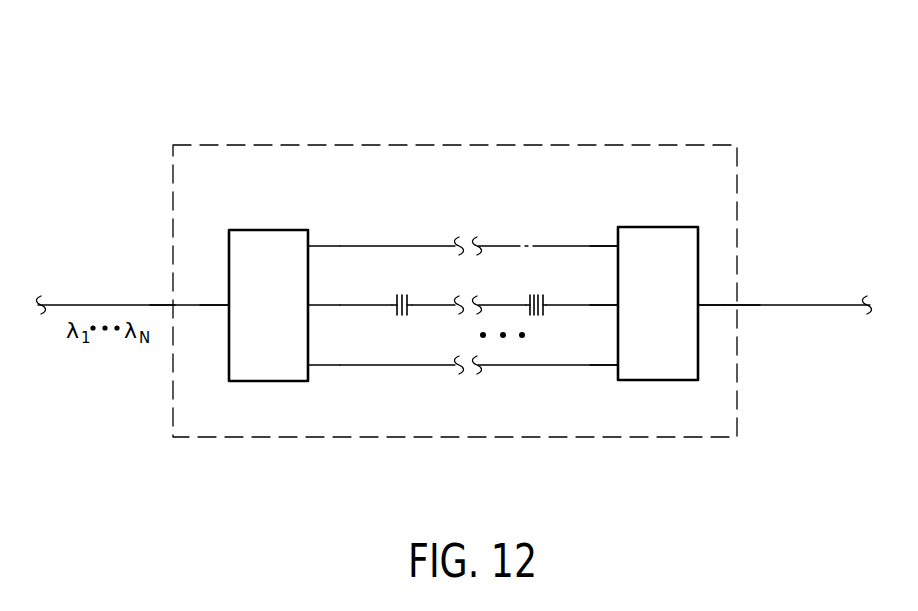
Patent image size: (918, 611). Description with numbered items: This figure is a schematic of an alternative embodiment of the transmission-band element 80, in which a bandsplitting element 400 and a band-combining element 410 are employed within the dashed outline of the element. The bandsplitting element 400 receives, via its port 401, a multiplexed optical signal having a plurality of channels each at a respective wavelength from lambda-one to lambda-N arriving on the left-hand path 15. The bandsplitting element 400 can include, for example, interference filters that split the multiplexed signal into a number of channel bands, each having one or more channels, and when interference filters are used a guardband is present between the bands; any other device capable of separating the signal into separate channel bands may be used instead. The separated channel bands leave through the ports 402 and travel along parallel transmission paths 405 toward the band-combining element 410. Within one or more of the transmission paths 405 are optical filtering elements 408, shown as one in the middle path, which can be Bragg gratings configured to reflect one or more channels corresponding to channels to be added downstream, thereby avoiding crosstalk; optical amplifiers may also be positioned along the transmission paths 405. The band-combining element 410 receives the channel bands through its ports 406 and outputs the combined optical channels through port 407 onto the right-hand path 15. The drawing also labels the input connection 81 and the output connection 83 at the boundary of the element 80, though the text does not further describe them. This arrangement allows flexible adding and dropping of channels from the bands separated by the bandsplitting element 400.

The transmission-band element 80 is at (476, 145).
The path 15 is at (82, 305).
The input port 81 is at (165, 305).
The output port 83 is at (738, 304).
The bandsplitting element 400 is at (290, 326).
The port 401 is at (226, 307).
The ports 402 is at (310, 246).
The transmission paths 405 is at (375, 246).
The ports 406 is at (600, 447).
The port 407 is at (700, 305).
The optical filtering elements 408 is at (405, 318).
The band-combining element 410 is at (680, 326).